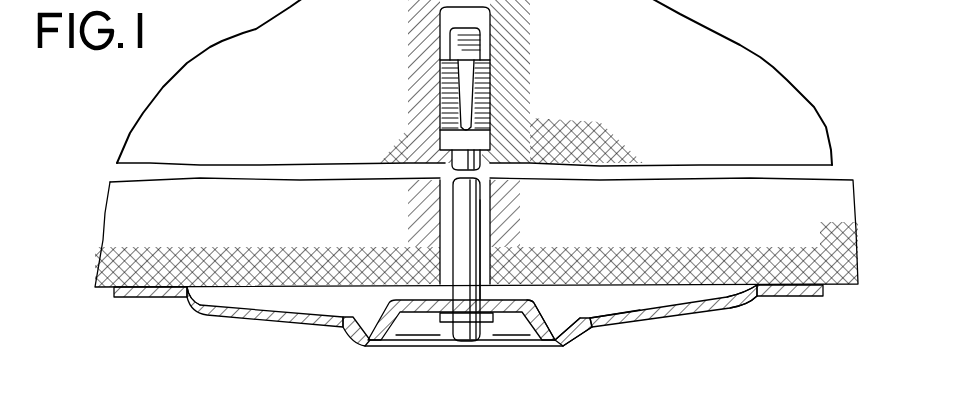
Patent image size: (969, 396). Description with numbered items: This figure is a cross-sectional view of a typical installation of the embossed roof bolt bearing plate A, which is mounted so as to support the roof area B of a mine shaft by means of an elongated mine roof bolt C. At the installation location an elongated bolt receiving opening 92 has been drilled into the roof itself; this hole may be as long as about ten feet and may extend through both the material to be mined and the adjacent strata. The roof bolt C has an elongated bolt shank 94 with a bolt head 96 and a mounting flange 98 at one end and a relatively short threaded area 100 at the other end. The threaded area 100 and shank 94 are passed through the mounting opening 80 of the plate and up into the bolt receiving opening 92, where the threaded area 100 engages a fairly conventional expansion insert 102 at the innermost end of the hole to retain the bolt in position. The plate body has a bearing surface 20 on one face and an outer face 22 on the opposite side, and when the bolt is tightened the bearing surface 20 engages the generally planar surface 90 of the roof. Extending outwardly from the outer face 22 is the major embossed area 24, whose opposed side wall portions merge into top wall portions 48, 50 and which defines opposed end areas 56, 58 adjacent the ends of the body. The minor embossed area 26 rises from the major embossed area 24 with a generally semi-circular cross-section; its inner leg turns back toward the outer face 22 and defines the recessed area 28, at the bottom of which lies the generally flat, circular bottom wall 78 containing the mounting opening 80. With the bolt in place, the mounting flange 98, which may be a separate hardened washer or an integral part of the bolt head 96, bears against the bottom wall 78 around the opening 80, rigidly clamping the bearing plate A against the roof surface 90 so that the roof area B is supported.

The threaded area 100 is at (453, 38).
The expansion insert 102 is at (440, 75).
The bolt receiving opening 92 is at (440, 207).
The bolt shank 94 is at (470, 216).
The mine roof bolt C is at (446, 225).
The roof area B is at (240, 239).
The bearing surface 20 is at (165, 287).
The planar surface 90 is at (315, 297).
The mounting opening 80 is at (493, 291).
The bottom wall 78 is at (513, 315).
The end area 56 is at (186, 298).
The top wall portion 48 is at (262, 318).
The bearing plate A is at (312, 340).
The recessed area 28 is at (420, 329).
The mounting flange 98 is at (445, 328).
The bolt head 96 is at (470, 343).
The minor embossed area 26 is at (587, 338).
The top wall portion 50 is at (690, 322).
The major embossed area 24 is at (715, 327).
The outer face 22 is at (803, 300).
The end area 58 is at (760, 300).